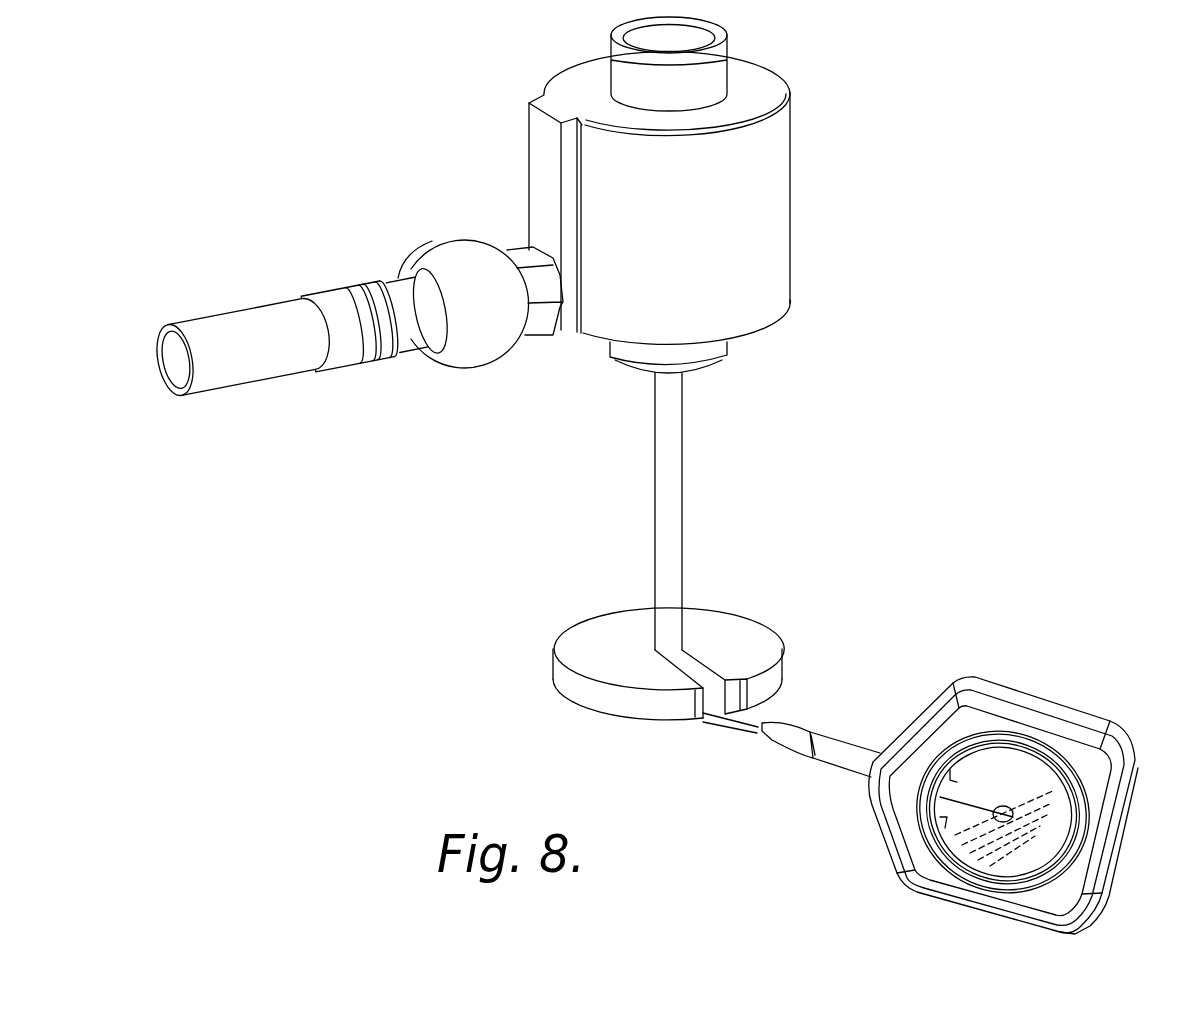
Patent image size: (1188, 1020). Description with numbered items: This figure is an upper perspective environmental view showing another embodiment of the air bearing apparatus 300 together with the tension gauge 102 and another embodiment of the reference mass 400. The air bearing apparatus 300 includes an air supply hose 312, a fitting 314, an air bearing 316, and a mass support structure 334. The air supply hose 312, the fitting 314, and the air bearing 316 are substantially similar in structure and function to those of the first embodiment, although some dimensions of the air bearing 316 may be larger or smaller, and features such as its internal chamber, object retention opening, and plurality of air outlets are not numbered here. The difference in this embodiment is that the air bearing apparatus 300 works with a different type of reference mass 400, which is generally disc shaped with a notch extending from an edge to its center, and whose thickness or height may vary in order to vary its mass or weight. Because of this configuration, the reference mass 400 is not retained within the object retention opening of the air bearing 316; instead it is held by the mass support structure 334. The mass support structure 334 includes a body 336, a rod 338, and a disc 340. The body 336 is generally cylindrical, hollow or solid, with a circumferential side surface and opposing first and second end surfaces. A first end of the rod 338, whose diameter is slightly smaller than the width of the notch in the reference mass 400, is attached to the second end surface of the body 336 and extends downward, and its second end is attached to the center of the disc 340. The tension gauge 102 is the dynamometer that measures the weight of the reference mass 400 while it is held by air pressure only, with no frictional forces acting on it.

The tension gauge 102 is at (1062, 678).
The air bearing apparatus 300 is at (880, 127).
The air supply hose 312 is at (235, 285).
The fitting 314 is at (412, 230).
The air bearing 316 is at (840, 233).
The mass support structure 334 is at (757, 393).
The body 336 is at (638, 33).
The rod 338 is at (660, 467).
The disc 340 is at (655, 730).
The reference mass 400 is at (577, 640).